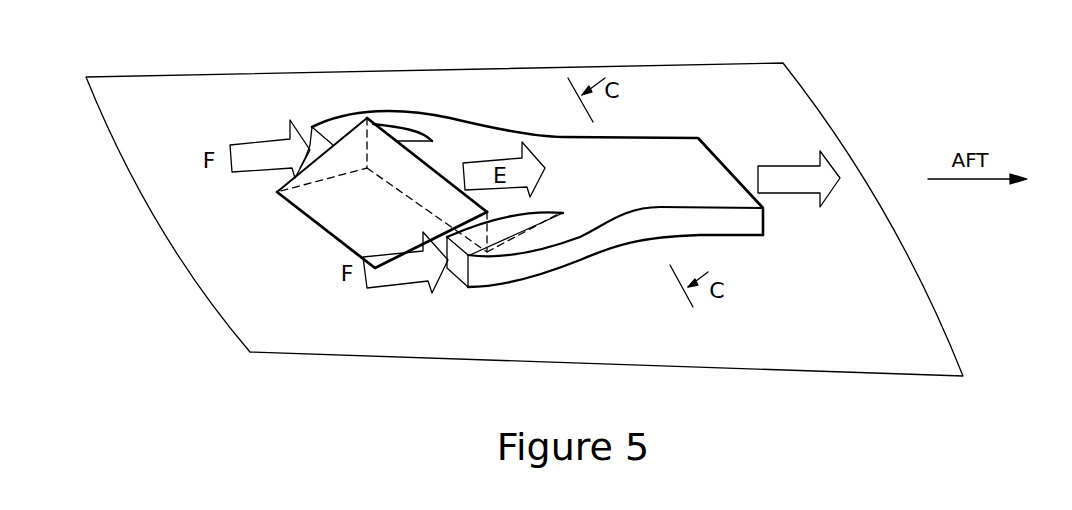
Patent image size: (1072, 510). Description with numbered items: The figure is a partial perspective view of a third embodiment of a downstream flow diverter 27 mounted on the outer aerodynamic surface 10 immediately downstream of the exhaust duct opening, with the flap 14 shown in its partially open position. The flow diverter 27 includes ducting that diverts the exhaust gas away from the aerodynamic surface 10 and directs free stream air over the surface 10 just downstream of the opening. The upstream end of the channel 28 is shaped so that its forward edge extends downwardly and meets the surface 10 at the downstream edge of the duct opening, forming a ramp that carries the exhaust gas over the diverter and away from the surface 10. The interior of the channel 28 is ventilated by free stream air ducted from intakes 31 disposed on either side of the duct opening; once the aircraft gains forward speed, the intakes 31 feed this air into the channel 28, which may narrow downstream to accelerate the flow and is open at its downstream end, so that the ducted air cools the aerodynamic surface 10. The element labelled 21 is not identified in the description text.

The aerodynamic surface 10 is at (908, 272).
The flap 14 is at (353, 140).
The flow body block 21 is at (340, 218).
The downstream flow diverter 27 is at (663, 150).
The channel 28 is at (703, 163).
The intakes 31 is at (330, 138).